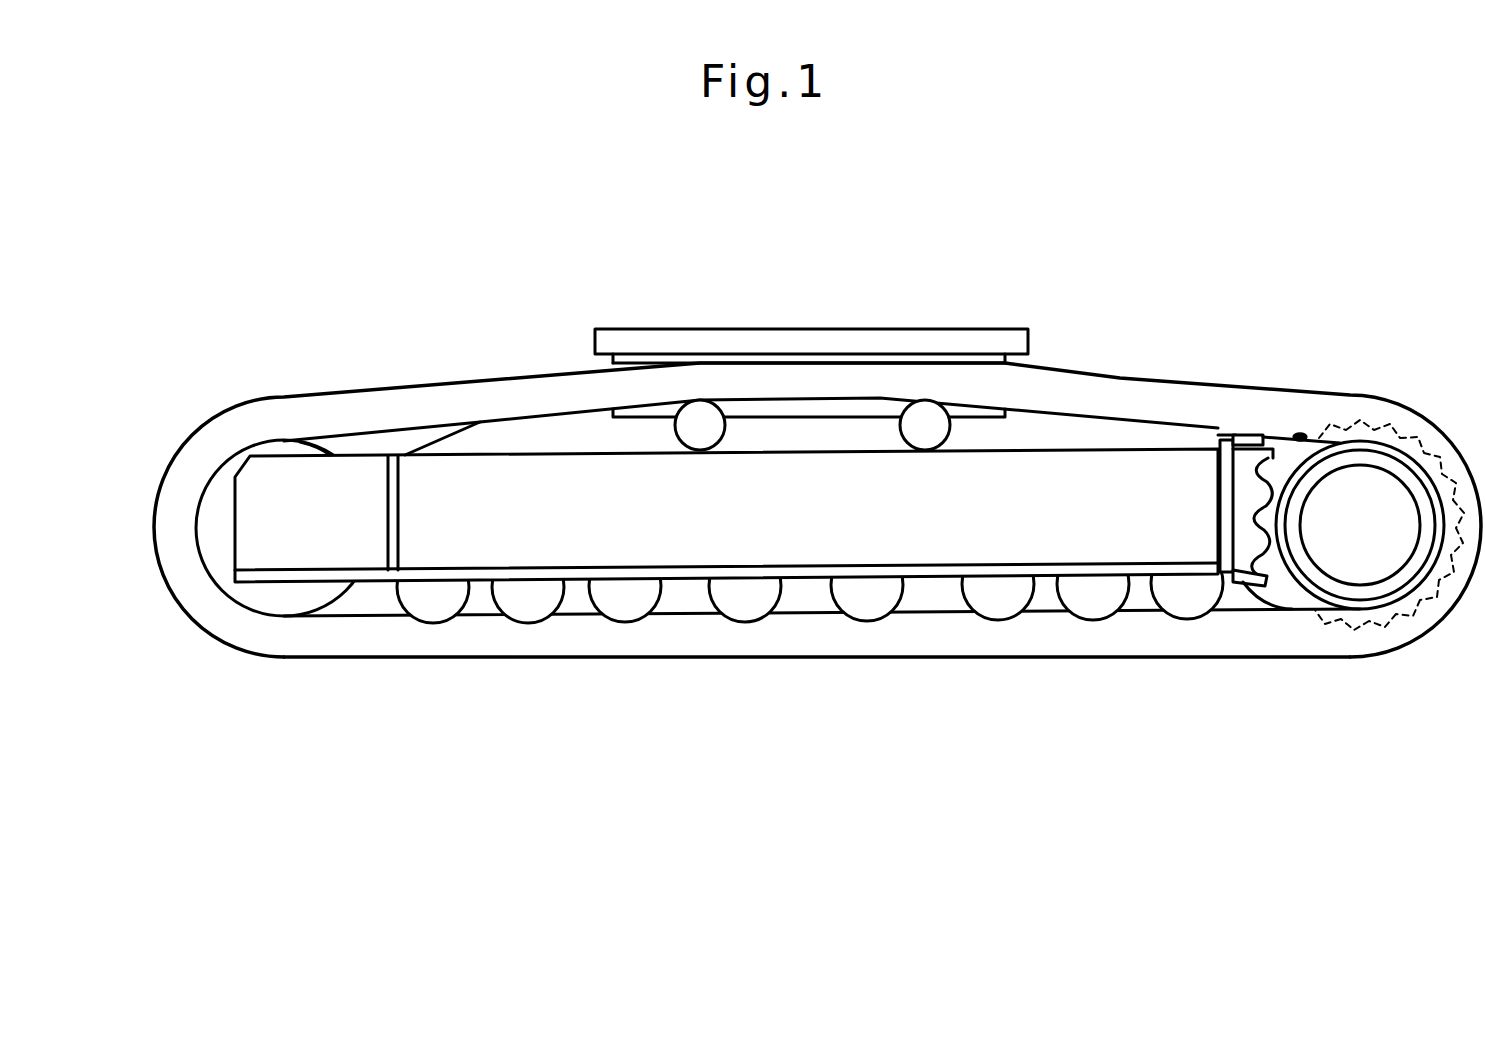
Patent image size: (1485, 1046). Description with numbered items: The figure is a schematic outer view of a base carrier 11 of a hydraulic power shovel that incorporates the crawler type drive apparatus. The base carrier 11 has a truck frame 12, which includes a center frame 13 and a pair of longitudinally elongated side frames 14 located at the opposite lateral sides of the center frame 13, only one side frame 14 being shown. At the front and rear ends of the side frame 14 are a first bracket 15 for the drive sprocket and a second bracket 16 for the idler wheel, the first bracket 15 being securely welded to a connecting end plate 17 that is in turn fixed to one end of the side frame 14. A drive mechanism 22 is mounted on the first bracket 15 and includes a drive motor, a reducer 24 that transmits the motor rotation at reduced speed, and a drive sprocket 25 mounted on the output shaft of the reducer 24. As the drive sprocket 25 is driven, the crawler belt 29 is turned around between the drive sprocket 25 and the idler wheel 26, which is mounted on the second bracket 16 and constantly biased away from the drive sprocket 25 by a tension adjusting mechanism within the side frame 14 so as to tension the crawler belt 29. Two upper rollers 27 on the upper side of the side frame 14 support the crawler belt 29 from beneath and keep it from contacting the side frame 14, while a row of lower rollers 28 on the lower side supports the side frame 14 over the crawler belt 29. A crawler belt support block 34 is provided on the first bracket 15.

The base carrier 11 is at (1058, 357).
The truck frame 12 is at (1172, 425).
The center frame 13 is at (778, 342).
The side frame 14 is at (512, 490).
The first bracket 15 is at (1243, 590).
The second bracket 16 is at (347, 455).
The connecting end plate 17 is at (1227, 440).
The drive mechanism 22 is at (1403, 453).
The reducer 24 is at (1368, 570).
The drive sprocket 25 is at (1297, 592).
The idler wheel 26 is at (287, 600).
The upper rollers 27 is at (700, 430).
The lower rollers 28 is at (433, 606).
The crawler belt 29 is at (803, 645).
The crawler belt support block 34 is at (1276, 425).